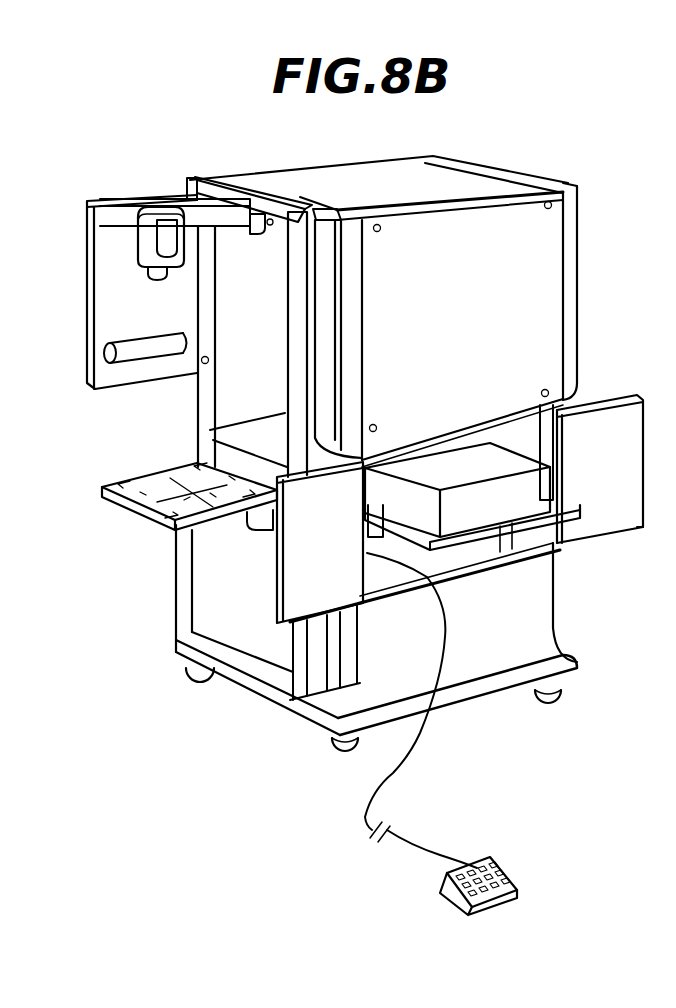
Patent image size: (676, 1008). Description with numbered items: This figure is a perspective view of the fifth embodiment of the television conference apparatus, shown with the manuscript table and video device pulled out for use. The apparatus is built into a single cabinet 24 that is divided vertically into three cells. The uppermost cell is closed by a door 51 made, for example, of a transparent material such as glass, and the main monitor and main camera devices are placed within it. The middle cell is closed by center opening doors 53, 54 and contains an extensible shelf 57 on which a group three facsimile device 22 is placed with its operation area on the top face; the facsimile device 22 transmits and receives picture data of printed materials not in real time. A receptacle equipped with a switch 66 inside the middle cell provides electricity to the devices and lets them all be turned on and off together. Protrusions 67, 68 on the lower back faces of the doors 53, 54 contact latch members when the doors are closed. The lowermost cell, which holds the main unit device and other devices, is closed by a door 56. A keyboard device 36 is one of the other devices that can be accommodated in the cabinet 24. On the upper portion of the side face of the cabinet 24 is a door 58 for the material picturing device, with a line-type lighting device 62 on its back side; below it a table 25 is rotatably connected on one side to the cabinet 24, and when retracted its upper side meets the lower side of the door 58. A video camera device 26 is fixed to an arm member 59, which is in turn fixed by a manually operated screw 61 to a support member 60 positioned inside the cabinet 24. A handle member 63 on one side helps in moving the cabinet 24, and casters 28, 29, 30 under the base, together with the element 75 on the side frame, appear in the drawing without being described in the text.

The group 3 facsimile device 22 is at (460, 463).
The cabinet 24 is at (503, 176).
The table 25 is at (133, 510).
The video camera device 26 is at (137, 232).
The caster 28 is at (207, 684).
The caster 29 is at (343, 762).
The caster 30 is at (547, 704).
The keyboard device 36 is at (500, 857).
The door 51 is at (543, 327).
The center opening door 53 is at (617, 402).
The center opening door 54 is at (270, 622).
The door 56 is at (460, 663).
The extensible shelf 57 is at (527, 547).
The door 58 is at (105, 213).
The arm member 59 is at (238, 212).
The support member 60 is at (290, 220).
The manually operated screw 61 is at (263, 232).
The line-type lighting device 62 is at (128, 364).
The handle member 63 is at (253, 523).
The receptacle equipped with a switch 66 is at (370, 577).
The protrusion 67 is at (638, 528).
The protrusion 68 is at (292, 625).
The hole 75 is at (203, 362).